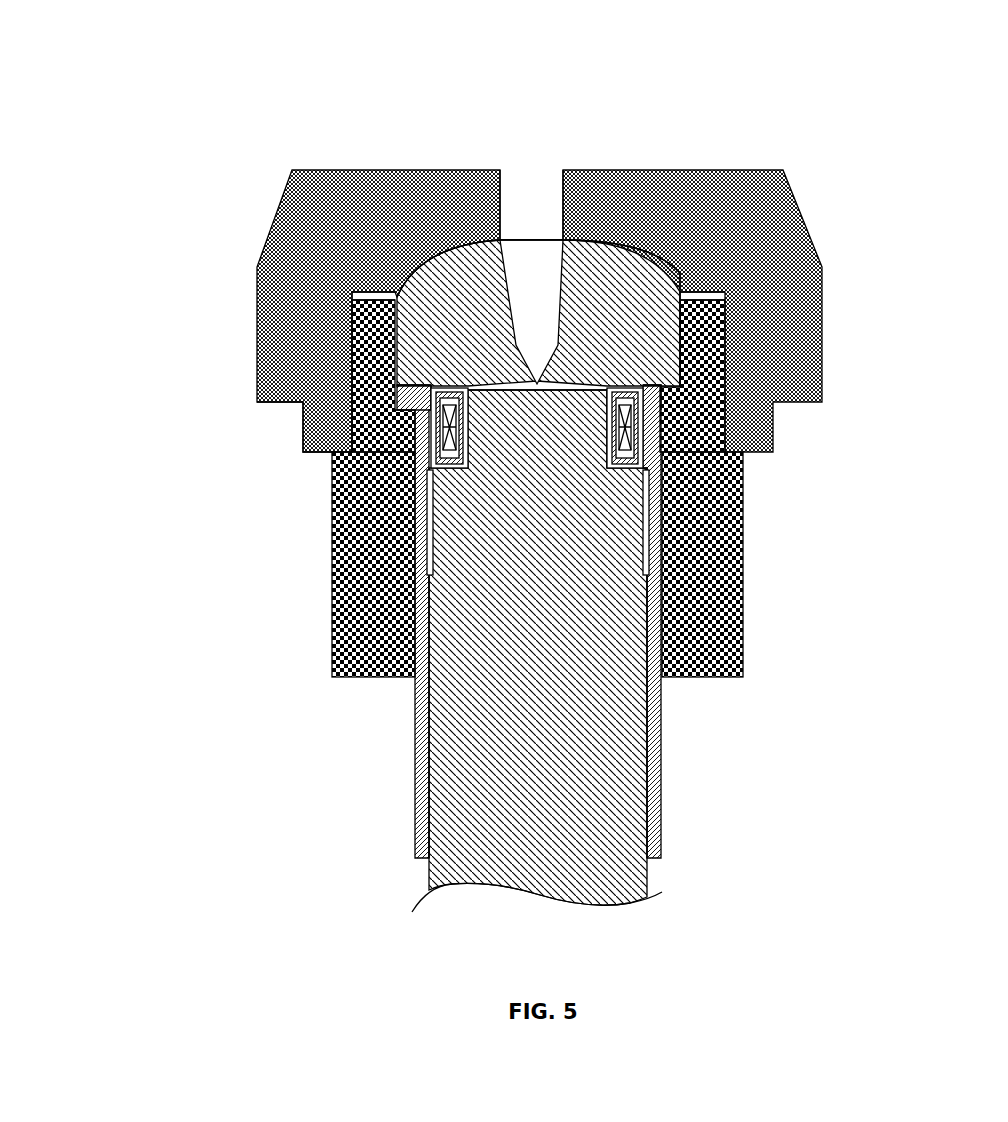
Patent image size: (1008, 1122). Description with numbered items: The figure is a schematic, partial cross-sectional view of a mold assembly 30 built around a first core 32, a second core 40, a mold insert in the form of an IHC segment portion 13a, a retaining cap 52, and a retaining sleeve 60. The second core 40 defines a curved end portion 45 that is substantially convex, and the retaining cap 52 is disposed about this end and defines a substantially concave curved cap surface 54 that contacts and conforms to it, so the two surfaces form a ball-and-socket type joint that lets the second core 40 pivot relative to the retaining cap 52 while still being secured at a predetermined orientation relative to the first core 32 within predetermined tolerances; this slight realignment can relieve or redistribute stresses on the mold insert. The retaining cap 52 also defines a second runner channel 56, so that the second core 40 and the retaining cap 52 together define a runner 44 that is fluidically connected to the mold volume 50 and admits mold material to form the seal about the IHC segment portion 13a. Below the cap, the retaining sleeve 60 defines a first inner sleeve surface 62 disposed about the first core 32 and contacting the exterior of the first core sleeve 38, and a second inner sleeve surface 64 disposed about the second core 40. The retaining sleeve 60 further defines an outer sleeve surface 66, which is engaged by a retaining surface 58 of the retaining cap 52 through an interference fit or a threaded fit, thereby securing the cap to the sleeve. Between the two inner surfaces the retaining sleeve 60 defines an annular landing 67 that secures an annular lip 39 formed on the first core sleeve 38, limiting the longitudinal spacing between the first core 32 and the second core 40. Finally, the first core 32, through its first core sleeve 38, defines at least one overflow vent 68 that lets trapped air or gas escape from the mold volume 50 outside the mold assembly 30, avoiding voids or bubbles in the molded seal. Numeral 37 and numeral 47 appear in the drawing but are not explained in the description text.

The mold assembly 30 is at (128, 72).
The first core 32 is at (412, 820).
The shaft upper end 37 is at (587, 408).
The first core sleeve 38 is at (422, 755).
The annular lip 39 is at (413, 413).
The second core 40 is at (650, 297).
The runner 44 is at (538, 328).
The curved end portion 45 is at (575, 282).
The core shoulder 47 is at (683, 303).
The mold volume 50 is at (463, 428).
The retaining cap 52 is at (266, 231).
The curved cap surface 54 is at (357, 338).
The second runner channel 56 is at (538, 188).
The retaining surface 58 is at (356, 310).
The retaining sleeve 60 is at (330, 603).
The first inner sleeve surface 62 is at (418, 620).
The second inner sleeve surface 64 is at (380, 330).
The outer sleeve surface 66 is at (345, 385).
The annular landing 67 is at (660, 418).
The overflow vent 68 is at (650, 543).
The IHC segment portion 13a is at (657, 438).